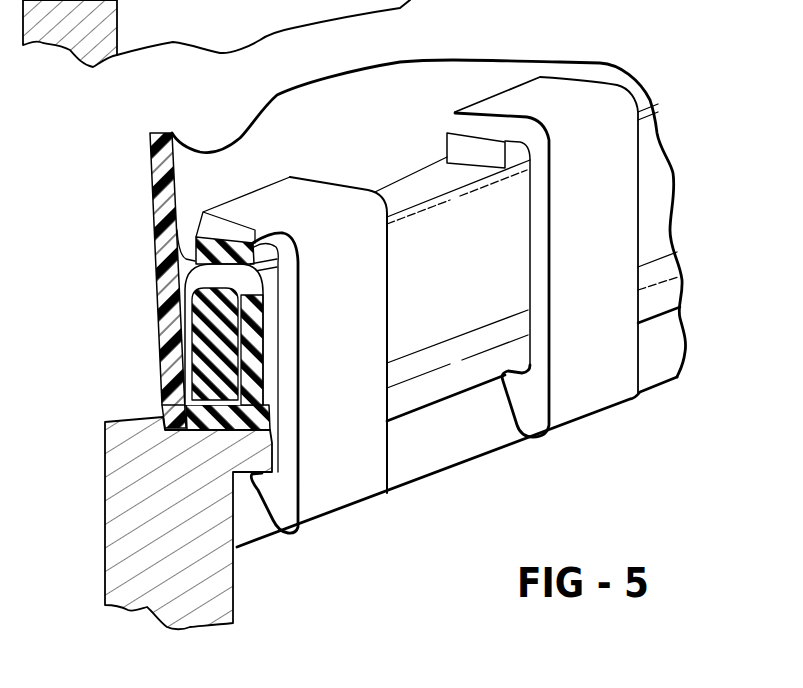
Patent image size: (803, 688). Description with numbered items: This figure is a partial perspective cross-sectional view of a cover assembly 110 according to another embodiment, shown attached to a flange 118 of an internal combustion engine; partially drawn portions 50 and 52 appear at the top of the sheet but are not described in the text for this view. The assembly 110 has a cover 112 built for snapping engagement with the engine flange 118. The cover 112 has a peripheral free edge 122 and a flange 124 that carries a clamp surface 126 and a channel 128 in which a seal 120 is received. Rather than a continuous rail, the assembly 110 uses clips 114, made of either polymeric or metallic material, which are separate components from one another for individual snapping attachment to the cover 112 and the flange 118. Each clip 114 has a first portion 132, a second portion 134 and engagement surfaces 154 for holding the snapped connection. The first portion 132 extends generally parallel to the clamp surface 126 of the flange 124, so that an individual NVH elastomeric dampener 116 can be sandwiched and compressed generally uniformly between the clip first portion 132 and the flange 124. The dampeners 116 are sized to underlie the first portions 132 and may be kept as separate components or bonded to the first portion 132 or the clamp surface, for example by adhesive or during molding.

The door frame portion 50 is at (270, 0).
The door panel portion 52 is at (89, 33).
The cover assembly 110 is at (616, 38).
The cover 112 is at (397, 58).
The clips 114 is at (620, 175).
The NVH elastomeric dampeners 116 is at (158, 222).
The flange 118 is at (252, 455).
The seal 120 is at (164, 418).
The peripheral free edge 122 is at (167, 407).
The flange 124 is at (264, 305).
The clamp surface 126 is at (253, 245).
The channel 128 is at (191, 297).
The first portion 132 is at (590, 50).
The second portion 134 is at (505, 410).
The engagement surfaces 154 is at (515, 362).